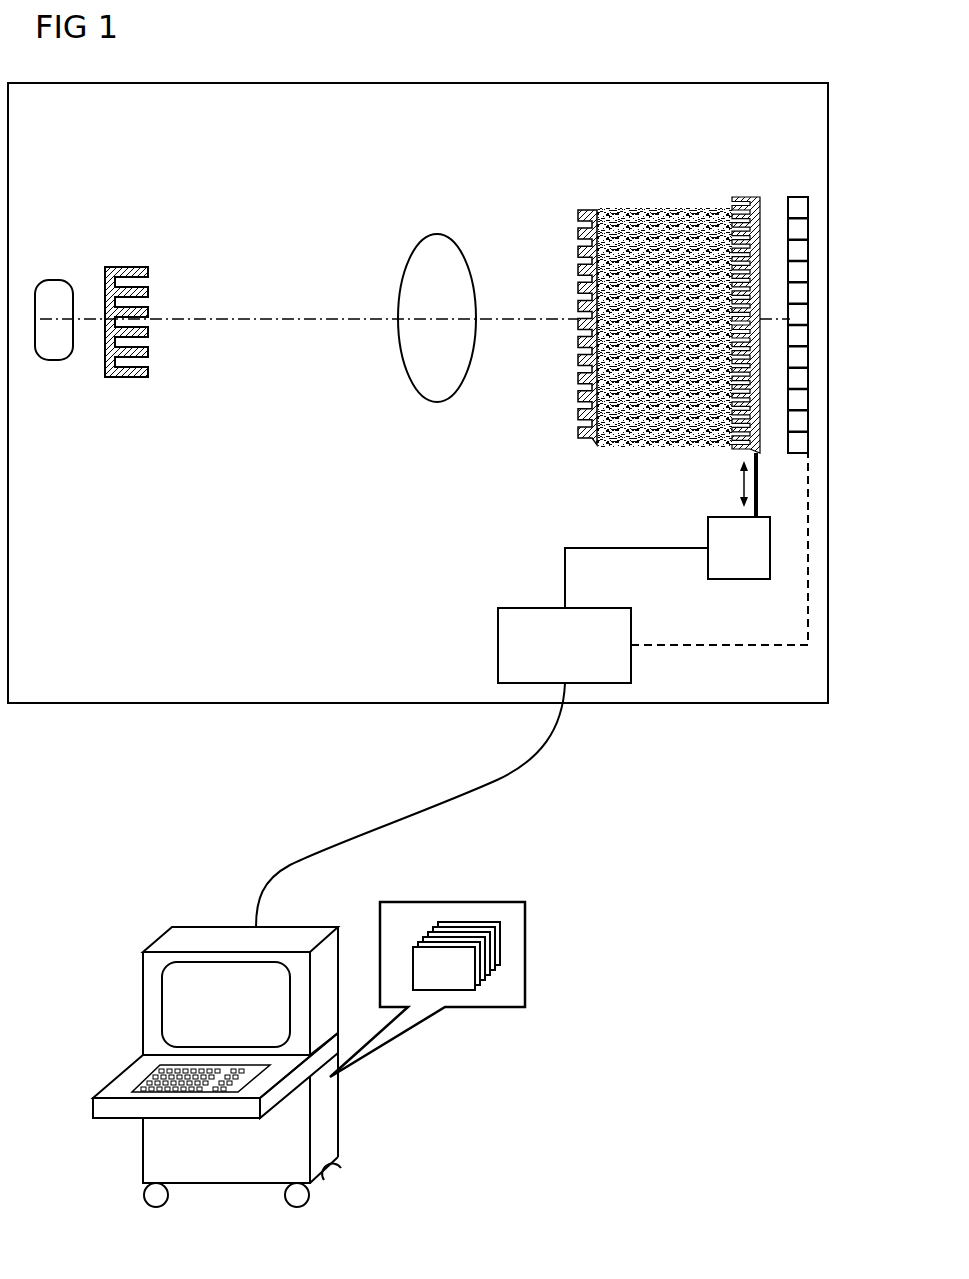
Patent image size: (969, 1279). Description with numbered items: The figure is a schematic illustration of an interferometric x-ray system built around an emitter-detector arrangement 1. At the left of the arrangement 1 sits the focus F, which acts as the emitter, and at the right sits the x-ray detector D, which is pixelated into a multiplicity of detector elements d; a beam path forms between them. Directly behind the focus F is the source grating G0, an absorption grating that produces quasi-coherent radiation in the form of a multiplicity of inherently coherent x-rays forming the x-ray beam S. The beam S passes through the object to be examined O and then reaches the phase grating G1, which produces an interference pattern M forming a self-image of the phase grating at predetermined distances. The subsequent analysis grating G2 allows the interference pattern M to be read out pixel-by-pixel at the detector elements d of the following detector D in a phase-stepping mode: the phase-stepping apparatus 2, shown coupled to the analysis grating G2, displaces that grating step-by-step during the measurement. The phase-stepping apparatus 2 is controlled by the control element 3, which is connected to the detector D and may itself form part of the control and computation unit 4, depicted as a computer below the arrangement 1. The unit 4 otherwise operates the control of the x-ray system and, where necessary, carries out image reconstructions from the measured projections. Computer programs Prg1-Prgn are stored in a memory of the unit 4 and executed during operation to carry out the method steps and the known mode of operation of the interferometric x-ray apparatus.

The emitter-detector arrangement 1 is at (150, 704).
The phase-stepping apparatus 2 is at (740, 580).
The control element 3 is at (521, 607).
The control and computation unit 4 is at (330, 1120).
The focus F is at (51, 279).
The source grating G0 is at (123, 266).
The x-ray beam S is at (290, 318).
The object to be examined O is at (436, 233).
The phase grating G1 is at (585, 209).
The interference pattern M is at (628, 449).
The analysis grating G2 is at (741, 197).
The x-ray detector D is at (802, 188).
The detector elements d is at (796, 199).
The computer programs Prg1-Prgn is at (460, 990).